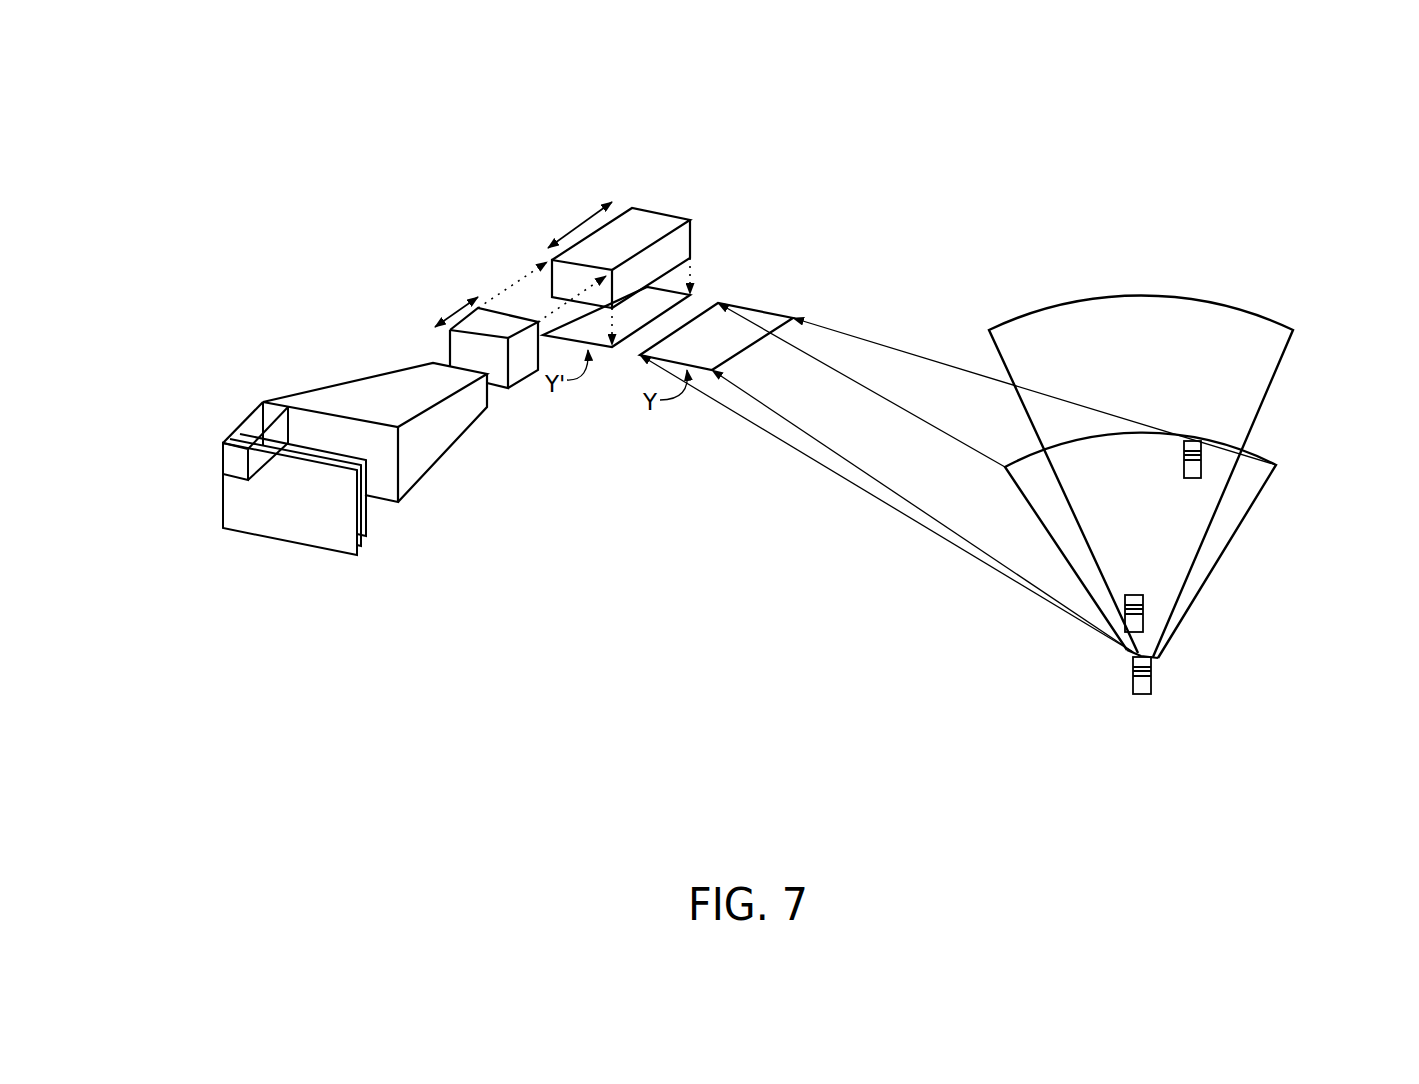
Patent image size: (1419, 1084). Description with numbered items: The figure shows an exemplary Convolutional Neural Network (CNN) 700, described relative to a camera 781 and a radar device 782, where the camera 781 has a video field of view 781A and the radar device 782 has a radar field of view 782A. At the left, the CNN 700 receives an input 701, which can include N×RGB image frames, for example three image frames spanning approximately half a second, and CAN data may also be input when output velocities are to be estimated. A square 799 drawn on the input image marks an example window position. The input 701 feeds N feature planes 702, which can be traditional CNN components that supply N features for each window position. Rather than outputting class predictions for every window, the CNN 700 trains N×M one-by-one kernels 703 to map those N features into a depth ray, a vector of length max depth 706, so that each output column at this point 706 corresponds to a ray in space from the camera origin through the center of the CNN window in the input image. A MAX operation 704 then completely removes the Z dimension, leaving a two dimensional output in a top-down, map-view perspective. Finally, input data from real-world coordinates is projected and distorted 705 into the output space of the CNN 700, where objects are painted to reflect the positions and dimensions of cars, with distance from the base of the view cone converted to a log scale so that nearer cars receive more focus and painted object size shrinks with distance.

The Convolutional Neural Network 700 is at (245, 110).
The input 701 is at (268, 553).
The feature planes 702 is at (437, 353).
The 1×1 kernels 703 is at (513, 277).
The MAX operation 704 is at (703, 272).
The projection 705 is at (855, 510).
The depth ray 706 is at (670, 202).
The camera 781 is at (1130, 668).
The video field of view 781A is at (1270, 488).
The radar device 782 is at (1158, 662).
The radar field of view 782A is at (1297, 340).
The square 799 is at (212, 460).